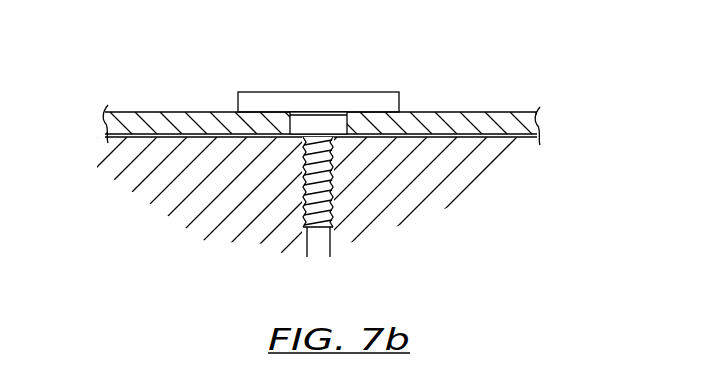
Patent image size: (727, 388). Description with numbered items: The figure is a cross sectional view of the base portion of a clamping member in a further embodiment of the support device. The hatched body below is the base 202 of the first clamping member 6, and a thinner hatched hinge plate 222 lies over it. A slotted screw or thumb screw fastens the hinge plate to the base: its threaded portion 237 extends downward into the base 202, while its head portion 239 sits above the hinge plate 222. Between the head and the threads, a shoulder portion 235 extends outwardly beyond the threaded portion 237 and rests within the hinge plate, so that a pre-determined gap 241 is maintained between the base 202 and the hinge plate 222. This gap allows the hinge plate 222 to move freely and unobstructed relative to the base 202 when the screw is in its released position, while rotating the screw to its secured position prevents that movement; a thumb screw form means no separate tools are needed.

The first clamping member 6 is at (243, 213).
The base 202 is at (168, 203).
The hinge plate 222 is at (158, 118).
The head portion 239 is at (358, 102).
The gap 241 is at (538, 130).
The shoulder portion 235 is at (345, 128).
The threaded portion 237 is at (333, 207).